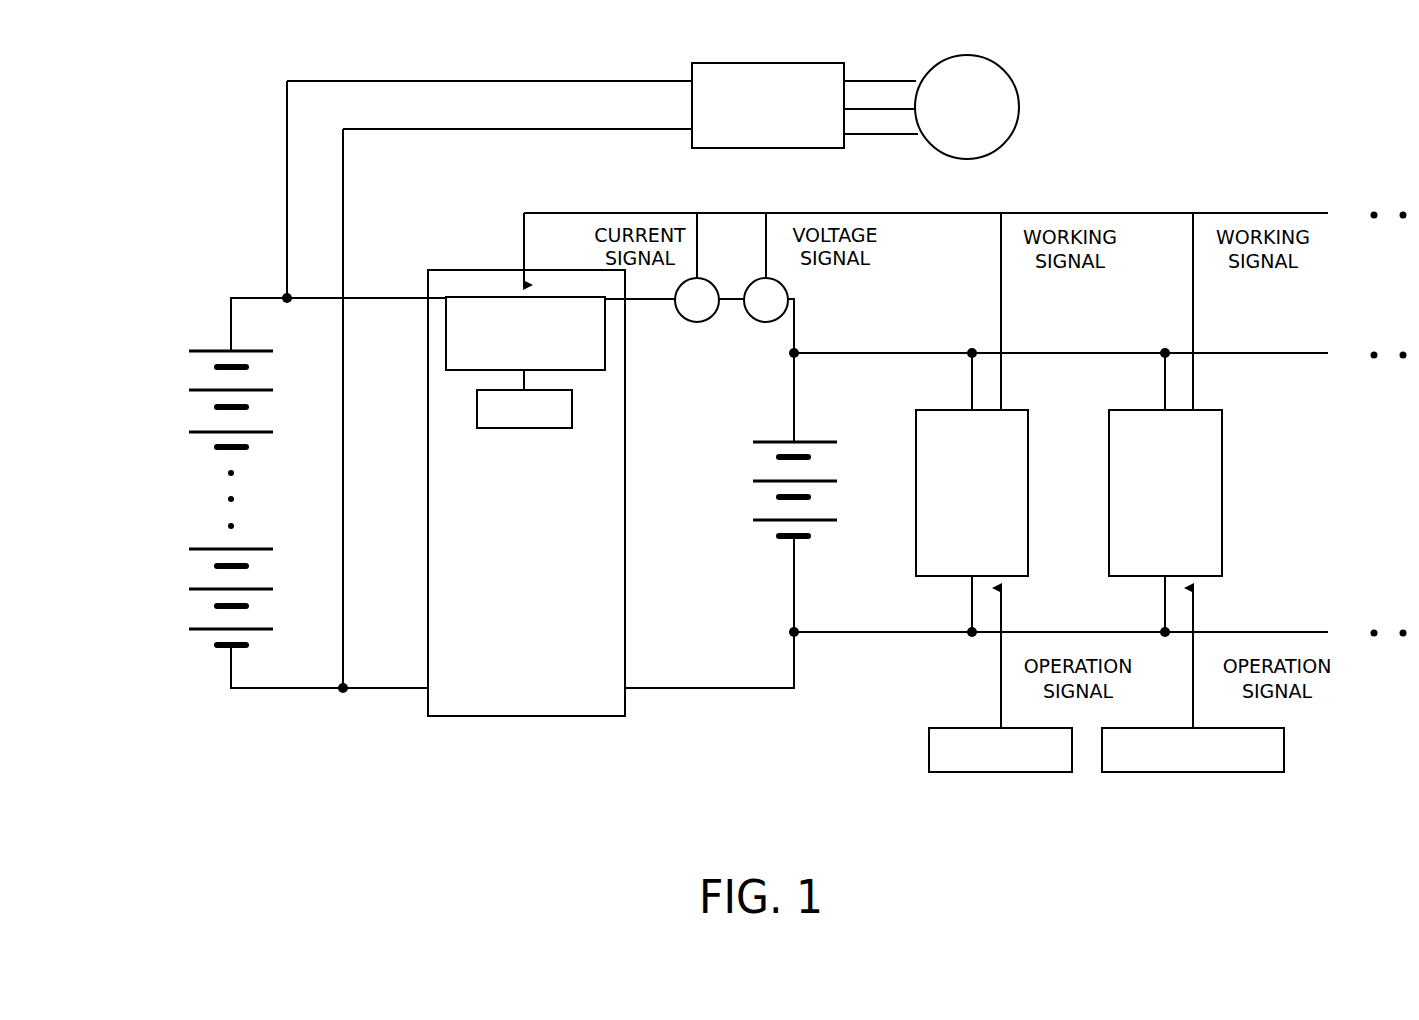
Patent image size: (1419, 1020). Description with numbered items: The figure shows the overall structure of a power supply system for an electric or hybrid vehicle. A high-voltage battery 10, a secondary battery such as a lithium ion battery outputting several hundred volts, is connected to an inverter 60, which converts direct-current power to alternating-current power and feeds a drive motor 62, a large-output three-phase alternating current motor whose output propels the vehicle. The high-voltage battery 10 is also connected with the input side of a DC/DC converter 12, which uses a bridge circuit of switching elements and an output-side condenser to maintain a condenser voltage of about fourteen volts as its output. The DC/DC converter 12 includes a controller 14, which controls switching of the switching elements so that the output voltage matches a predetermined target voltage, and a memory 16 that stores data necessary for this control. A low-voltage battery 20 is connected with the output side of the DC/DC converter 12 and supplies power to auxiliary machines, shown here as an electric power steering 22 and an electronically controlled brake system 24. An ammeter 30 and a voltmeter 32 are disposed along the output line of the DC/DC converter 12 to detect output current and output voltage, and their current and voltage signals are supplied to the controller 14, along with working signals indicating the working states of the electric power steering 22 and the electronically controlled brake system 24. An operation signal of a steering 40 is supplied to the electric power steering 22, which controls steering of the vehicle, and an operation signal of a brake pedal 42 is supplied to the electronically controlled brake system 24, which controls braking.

The high-voltage battery 10 is at (192, 483).
The DC/DC converter 12 is at (428, 420).
The controller 14 is at (466, 297).
The memory 16 is at (572, 407).
The low-voltage battery 20 is at (745, 490).
The electric power steering 22 is at (916, 478).
The electronically controlled brake system 24 is at (1222, 460).
The ammeter 30 is at (706, 320).
The voltmeter 32 is at (783, 284).
The steering 40 is at (929, 748).
The brake pedal 42 is at (1284, 752).
The inverter 60 is at (692, 72).
The drive motor 62 is at (1019, 107).